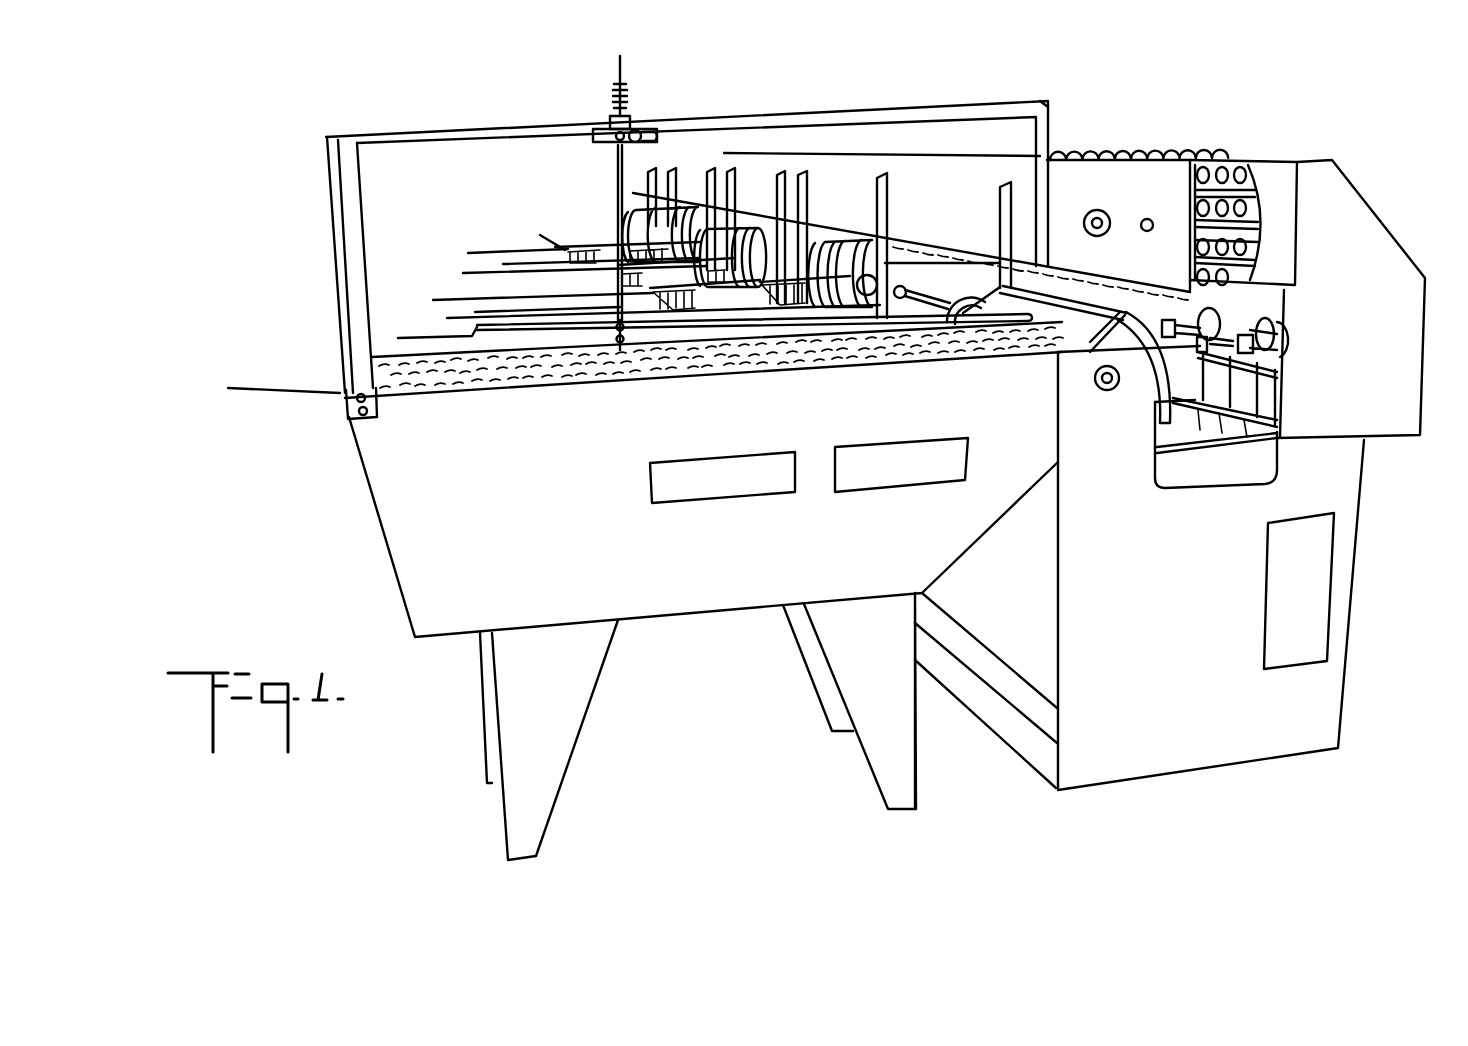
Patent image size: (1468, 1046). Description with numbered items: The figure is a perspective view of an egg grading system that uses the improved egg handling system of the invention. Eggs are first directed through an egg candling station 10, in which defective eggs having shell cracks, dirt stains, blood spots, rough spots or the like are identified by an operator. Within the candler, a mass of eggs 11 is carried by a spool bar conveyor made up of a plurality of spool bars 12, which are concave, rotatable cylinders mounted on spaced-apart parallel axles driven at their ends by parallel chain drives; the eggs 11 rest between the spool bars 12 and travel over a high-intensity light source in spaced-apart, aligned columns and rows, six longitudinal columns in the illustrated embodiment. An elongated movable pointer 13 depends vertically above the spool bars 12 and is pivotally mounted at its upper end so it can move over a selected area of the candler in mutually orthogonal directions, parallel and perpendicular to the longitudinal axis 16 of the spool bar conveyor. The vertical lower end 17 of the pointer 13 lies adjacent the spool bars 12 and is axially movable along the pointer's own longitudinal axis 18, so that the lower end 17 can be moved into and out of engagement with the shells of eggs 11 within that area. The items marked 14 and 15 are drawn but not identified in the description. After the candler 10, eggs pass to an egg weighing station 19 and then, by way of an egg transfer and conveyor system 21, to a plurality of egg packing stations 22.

The egg candling station 10 is at (424, 270).
The eggs 11 is at (500, 377).
The spool bars 12 is at (450, 374).
The movable pointer 13 is at (617, 174).
The guide rails 14 is at (594, 296).
The front rail 15 is at (602, 322).
The longitudinal axis 16 is at (325, 388).
The lower end 17 is at (630, 352).
The longitudinal axis 18 is at (622, 78).
The egg weighing station 19 is at (1088, 335).
The egg transfer and conveyor system 21 is at (1234, 151).
The egg packing stations 22 is at (838, 191).